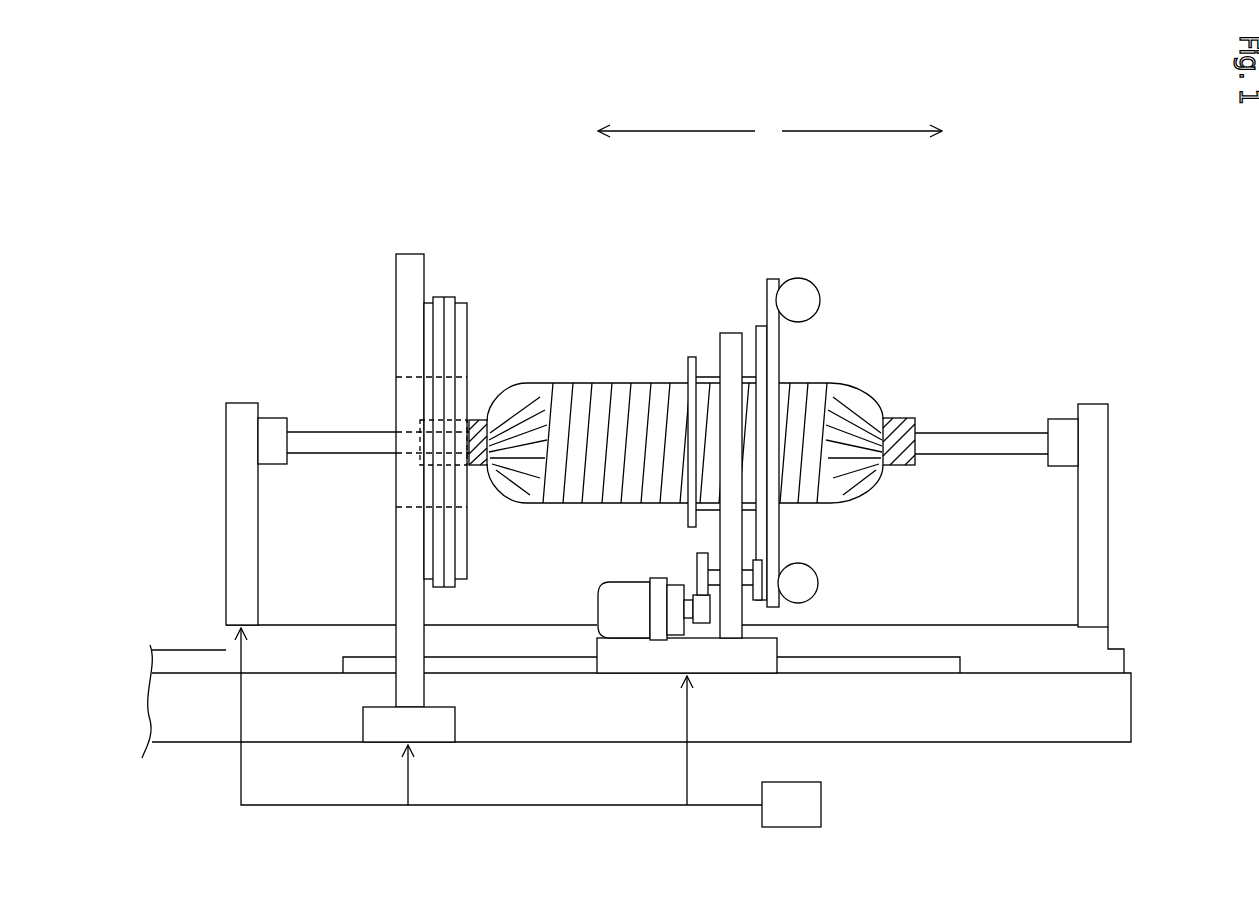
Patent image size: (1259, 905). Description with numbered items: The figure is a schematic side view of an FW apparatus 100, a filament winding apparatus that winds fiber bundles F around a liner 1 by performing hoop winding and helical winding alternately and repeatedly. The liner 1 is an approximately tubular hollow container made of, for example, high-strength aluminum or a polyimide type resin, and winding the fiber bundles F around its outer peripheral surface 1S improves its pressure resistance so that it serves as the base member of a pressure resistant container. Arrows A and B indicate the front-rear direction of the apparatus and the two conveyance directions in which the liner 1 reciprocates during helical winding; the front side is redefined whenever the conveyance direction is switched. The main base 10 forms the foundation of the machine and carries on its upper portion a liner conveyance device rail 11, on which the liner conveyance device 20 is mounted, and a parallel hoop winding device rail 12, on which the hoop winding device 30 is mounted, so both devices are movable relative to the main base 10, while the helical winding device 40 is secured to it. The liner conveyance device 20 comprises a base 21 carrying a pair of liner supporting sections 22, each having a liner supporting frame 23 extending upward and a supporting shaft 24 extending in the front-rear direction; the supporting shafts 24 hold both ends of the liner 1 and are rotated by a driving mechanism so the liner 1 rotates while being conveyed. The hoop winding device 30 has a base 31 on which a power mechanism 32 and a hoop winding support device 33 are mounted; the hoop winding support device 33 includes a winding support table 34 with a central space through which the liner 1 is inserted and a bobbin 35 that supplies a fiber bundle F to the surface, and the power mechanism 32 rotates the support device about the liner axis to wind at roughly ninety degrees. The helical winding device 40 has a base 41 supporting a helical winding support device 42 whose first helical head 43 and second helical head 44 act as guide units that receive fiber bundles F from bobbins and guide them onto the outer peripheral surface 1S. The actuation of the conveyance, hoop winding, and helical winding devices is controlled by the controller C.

The FW apparatus 100 is at (289, 189).
The liner 1 is at (644, 346).
The outer peripheral surface 1S is at (590, 383).
The fiber bundle F is at (553, 397).
The main base 10 is at (940, 743).
The liner conveyance device rail 11 is at (174, 655).
The hoop winding device rail 12 is at (514, 657).
The liner conveyance device 20 is at (193, 354).
The base 21 is at (318, 628).
The liner supporting section 22 is at (233, 386).
The liner supporting frame 23 is at (242, 478).
The supporting shaft 24 is at (338, 443).
The hoop winding device 30 is at (743, 235).
The base 31 is at (730, 336).
The power mechanism 32 is at (599, 579).
The hoop winding support device 33 is at (776, 272).
The winding support table 34 is at (768, 298).
The bobbin 35 is at (813, 300).
The helical winding device 40 is at (413, 232).
The base 41 is at (403, 267).
The helical winding support device 42 is at (466, 251).
The first helical head 43 is at (452, 297).
The second helical head 44 is at (443, 297).
The arrow A is at (676, 115).
The arrow B is at (862, 115).
The controller C is at (812, 806).